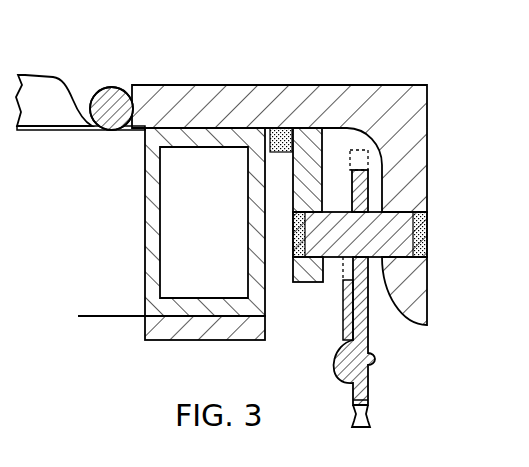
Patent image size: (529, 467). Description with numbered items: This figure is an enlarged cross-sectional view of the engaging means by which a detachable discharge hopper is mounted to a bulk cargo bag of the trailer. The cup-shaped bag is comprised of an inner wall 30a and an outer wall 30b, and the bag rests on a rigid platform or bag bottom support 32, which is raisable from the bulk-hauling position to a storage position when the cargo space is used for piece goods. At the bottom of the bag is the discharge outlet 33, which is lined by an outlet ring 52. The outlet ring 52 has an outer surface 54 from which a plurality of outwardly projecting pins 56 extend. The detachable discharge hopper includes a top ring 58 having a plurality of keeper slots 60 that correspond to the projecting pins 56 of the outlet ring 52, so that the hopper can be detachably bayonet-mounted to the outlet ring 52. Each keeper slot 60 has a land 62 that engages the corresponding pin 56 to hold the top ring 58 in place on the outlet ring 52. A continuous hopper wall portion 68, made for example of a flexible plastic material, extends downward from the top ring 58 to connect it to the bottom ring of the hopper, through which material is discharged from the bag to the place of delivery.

The inner wall 30a is at (74, 98).
The outer wall 30b is at (70, 130).
The bag bottom support 32 is at (148, 303).
The discharge outlet 33 is at (453, 92).
The outlet ring 52 is at (423, 153).
The outer surface 54 is at (383, 295).
The projecting pin 56 is at (335, 262).
The top ring 58 is at (360, 320).
The keeper slot 60 is at (358, 268).
The land 62 is at (358, 217).
The hopper wall portion 68 is at (370, 418).